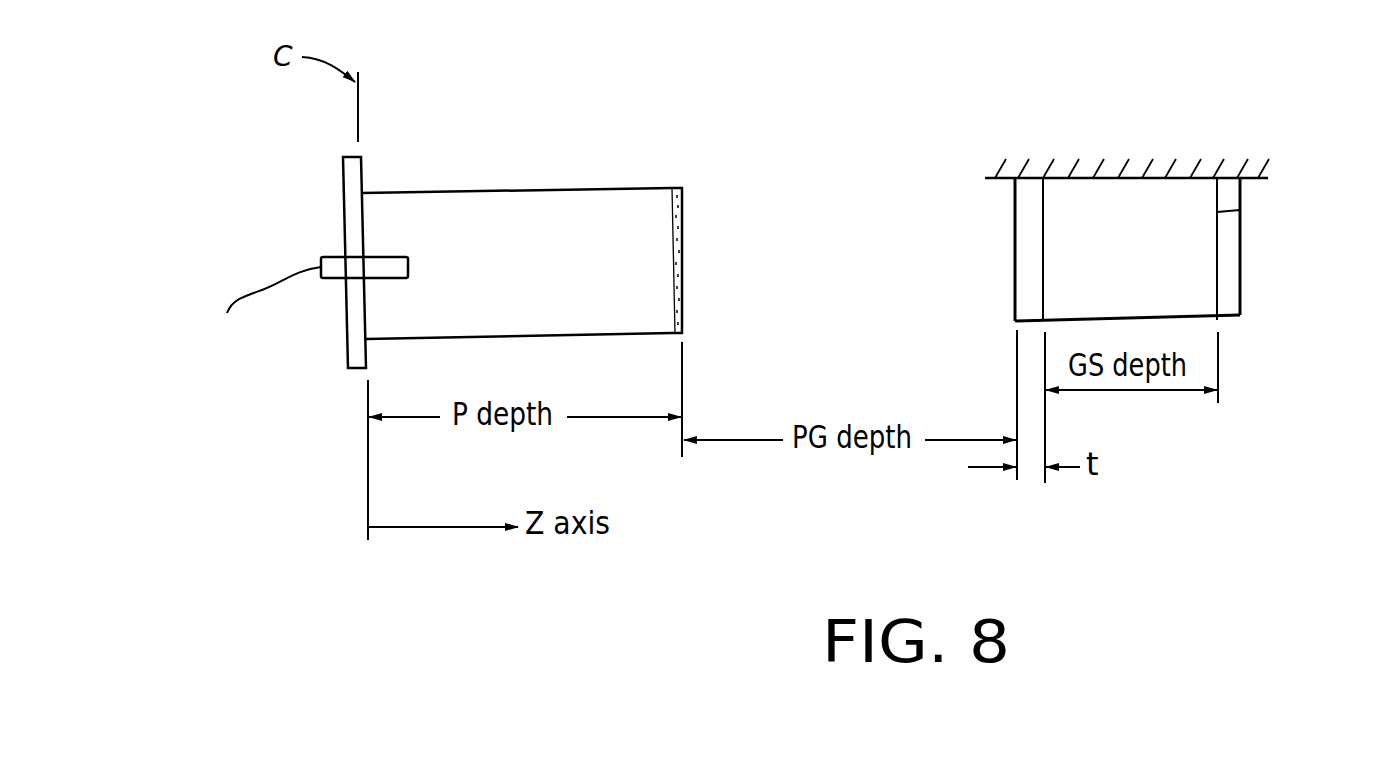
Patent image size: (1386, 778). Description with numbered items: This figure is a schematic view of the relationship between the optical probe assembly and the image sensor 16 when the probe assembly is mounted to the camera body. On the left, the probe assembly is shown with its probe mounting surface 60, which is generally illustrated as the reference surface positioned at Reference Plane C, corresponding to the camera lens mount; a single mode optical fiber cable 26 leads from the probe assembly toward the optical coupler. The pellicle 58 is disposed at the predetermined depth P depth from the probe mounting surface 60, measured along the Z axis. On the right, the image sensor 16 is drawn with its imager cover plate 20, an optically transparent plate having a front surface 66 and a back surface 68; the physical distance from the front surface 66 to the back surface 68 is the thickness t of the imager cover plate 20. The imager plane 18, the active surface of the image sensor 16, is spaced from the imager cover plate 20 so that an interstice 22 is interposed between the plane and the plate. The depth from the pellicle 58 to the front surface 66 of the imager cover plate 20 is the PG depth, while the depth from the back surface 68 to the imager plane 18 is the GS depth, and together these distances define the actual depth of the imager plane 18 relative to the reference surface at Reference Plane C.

The image sensor 16 is at (1157, 209).
The imager plane 18 is at (1241, 210).
The imager cover plate 20 is at (1042, 212).
The interstice 22 is at (1193, 280).
The single mode optical fiber cable 26 is at (272, 281).
The pellicle 58 is at (683, 210).
The probe mounting surface 60 is at (363, 172).
The front surface 66 is at (1013, 260).
The back surface 68 is at (1045, 287).